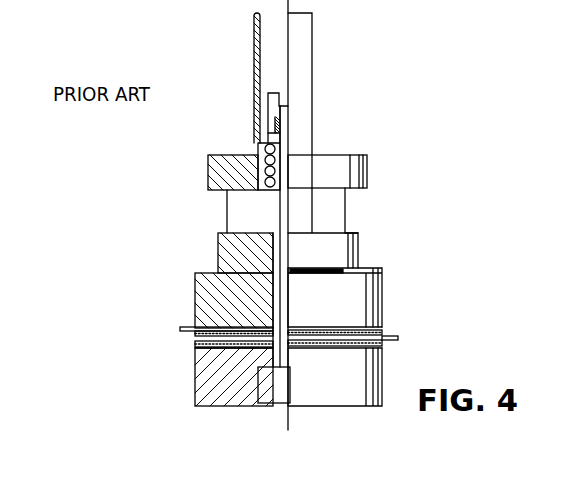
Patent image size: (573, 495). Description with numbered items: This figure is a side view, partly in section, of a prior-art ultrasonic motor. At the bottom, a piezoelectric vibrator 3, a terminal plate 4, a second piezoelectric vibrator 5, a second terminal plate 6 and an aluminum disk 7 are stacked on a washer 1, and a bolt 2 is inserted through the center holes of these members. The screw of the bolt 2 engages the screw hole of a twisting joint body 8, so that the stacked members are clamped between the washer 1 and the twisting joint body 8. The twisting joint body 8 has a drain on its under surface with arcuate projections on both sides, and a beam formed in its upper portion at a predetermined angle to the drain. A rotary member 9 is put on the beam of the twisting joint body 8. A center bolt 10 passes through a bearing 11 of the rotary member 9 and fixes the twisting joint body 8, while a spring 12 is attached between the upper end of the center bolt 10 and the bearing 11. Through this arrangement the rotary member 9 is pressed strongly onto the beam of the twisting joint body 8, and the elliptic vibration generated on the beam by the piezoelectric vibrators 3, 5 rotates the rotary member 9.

The washer 1 is at (380, 378).
The bolt 2 is at (277, 392).
The piezoelectric vibrator 3 is at (385, 342).
The terminal plate 4 is at (388, 332).
The piezoelectric vibrator 5 is at (196, 340).
The terminal plate 6 is at (190, 326).
The aluminum disk 7 is at (375, 293).
The twisting joint body 8 is at (355, 250).
The rotary member 9 is at (355, 172).
The center bolt 10 is at (292, 130).
The bearing 11 is at (256, 150).
The spring 12 is at (270, 128).